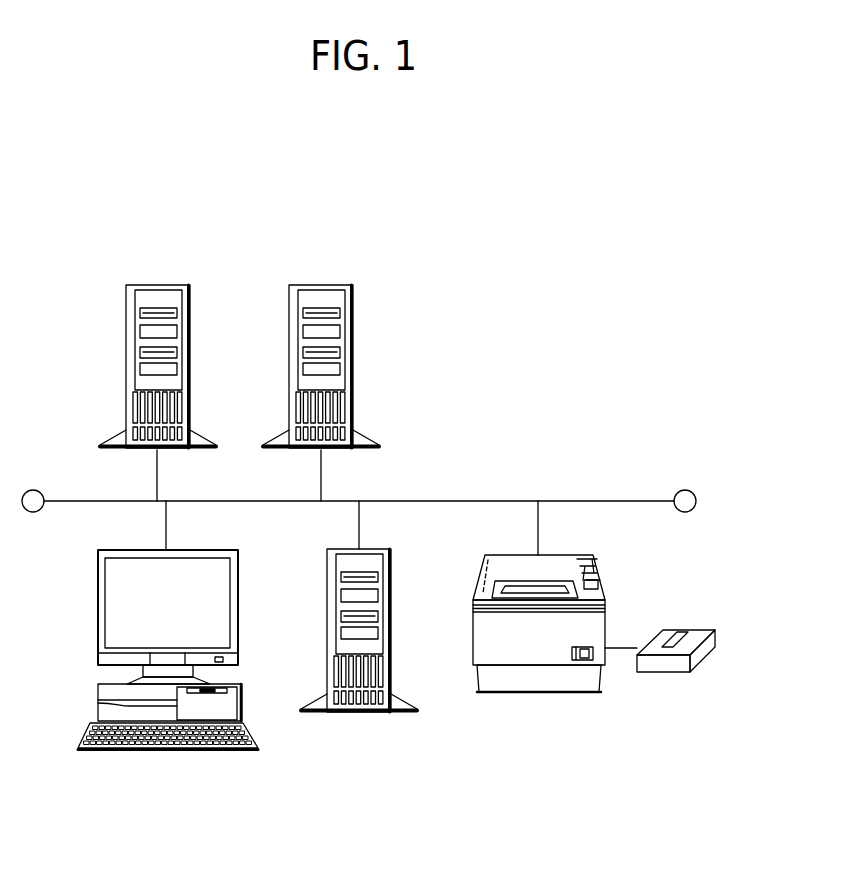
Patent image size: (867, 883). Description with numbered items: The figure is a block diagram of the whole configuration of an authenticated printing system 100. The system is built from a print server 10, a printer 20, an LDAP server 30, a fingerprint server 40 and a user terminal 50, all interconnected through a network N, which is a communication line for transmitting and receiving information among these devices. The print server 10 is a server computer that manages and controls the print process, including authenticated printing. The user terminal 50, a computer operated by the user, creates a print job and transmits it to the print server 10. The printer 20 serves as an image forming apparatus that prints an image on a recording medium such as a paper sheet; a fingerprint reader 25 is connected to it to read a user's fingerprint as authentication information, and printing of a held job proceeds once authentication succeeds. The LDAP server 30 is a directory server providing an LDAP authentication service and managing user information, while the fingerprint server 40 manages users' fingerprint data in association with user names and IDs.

The authenticated printing system 100 is at (692, 363).
The network N is at (615, 500).
The print server 10 is at (357, 717).
The printer 20 is at (535, 695).
The fingerprint reader 25 is at (705, 657).
The LDAP server 30 is at (172, 283).
The fingerprint server 40 is at (335, 283).
The user terminal 50 is at (168, 752).